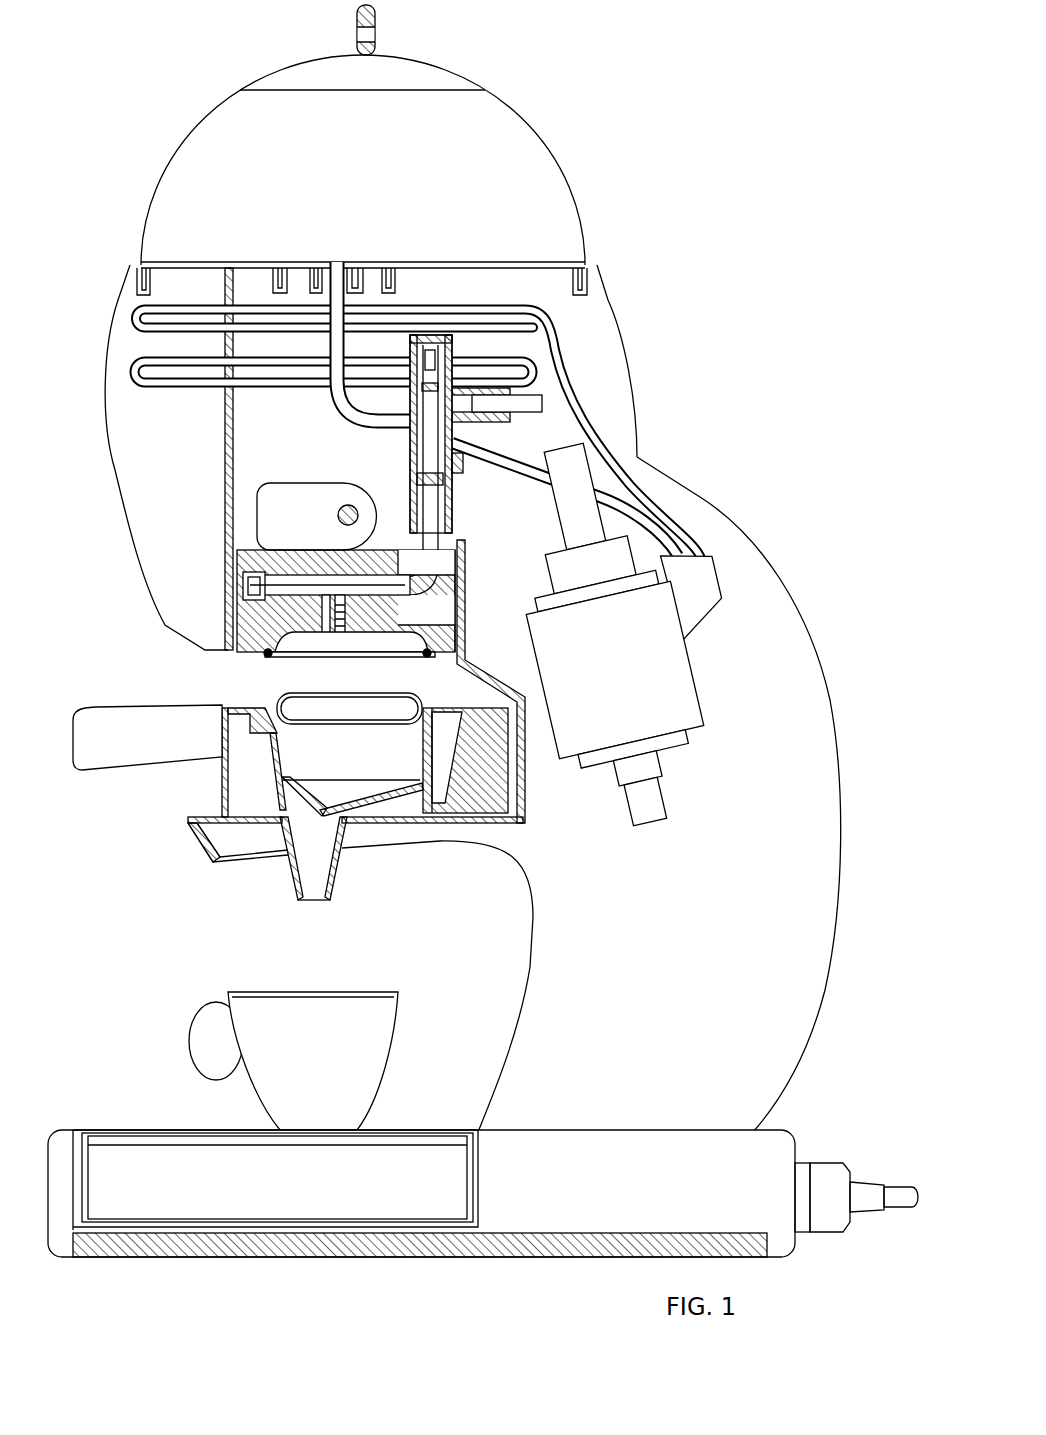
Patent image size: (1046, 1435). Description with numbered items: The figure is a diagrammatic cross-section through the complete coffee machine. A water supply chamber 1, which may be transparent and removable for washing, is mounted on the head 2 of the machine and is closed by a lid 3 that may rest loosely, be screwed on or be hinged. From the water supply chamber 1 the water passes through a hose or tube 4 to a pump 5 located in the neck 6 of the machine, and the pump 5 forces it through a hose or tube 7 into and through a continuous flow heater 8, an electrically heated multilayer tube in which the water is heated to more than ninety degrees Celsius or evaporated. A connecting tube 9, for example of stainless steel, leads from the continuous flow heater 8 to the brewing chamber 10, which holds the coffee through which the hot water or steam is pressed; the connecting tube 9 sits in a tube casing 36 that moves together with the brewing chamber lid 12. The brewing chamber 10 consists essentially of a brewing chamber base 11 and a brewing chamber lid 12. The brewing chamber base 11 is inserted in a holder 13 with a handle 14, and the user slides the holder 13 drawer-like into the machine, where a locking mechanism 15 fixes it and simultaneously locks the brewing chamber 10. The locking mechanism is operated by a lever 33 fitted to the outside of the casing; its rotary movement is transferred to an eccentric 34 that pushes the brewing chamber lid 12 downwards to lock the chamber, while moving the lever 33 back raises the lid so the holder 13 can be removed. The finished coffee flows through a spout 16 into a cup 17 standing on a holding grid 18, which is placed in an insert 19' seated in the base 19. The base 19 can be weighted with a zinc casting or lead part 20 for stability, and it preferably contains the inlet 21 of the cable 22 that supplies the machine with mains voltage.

The water supply chamber 1 is at (558, 158).
The head 2 is at (628, 313).
The lid 3 is at (430, 75).
The hose or tube 4 is at (330, 352).
The pump 5 is at (668, 675).
The neck 6 is at (800, 578).
The hose or tube 7 is at (572, 392).
The continuous flow heater 8 is at (132, 326).
The connecting tube 9 is at (428, 585).
The brewing chamber 10 is at (262, 690).
The brewing chamber base 11 is at (315, 728).
The brewing chamber lid 12 is at (392, 546).
The holder 13 is at (215, 783).
The handle 14 is at (103, 720).
The locking mechanism 15 is at (245, 517).
The spout 16 is at (345, 878).
The cup 17 is at (385, 1045).
The holding grid 18 is at (130, 1138).
The base 19 is at (421, 1155).
The insert 19' is at (277, 1181).
The lead part 20 is at (597, 1238).
The inlet 21 is at (803, 1165).
The cable 22 is at (900, 1190).
The lever 33 is at (345, 505).
The eccentric 34 is at (278, 488).
The tube casing 36 is at (455, 510).